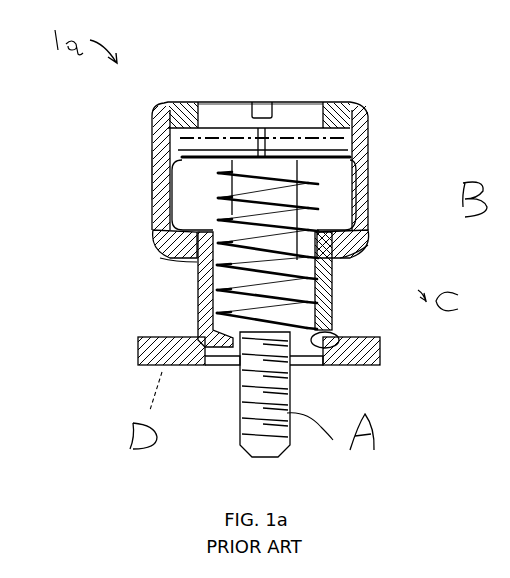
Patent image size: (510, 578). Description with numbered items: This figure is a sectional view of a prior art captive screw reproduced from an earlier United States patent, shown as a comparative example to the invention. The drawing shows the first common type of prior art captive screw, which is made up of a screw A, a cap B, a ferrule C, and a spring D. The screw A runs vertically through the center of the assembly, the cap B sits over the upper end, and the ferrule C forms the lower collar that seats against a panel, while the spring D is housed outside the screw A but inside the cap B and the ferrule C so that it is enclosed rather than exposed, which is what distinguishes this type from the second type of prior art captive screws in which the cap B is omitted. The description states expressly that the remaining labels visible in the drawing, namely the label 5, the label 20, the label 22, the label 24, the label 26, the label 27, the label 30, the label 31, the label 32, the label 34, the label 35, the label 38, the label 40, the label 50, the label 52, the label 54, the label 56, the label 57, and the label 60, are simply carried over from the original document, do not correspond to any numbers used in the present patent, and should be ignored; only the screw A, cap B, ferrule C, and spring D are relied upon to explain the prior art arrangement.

The section line 5- 5 is at (163, 132).
The cap 20 is at (286, 100).
The bolt 22 is at (292, 396).
The top plate 24 is at (216, 108).
The hub 26 is at (275, 139).
The notch 27 is at (259, 100).
The housing 30 is at (373, 232).
The hatched rim block 31 is at (185, 101).
The housing side wall 32 is at (156, 178).
The centerline plate 34 is at (175, 139).
The right rolled lip 35 is at (353, 260).
The inner cavity wall 38 is at (166, 207).
The coil spring 40 is at (352, 162).
The right collar 50 is at (340, 292).
The flange under plate 52 is at (230, 371).
The left flange 54 is at (190, 262).
The rolled lip 56 is at (156, 237).
The sleeve 57 is at (220, 317).
The base plate 60 is at (373, 346).